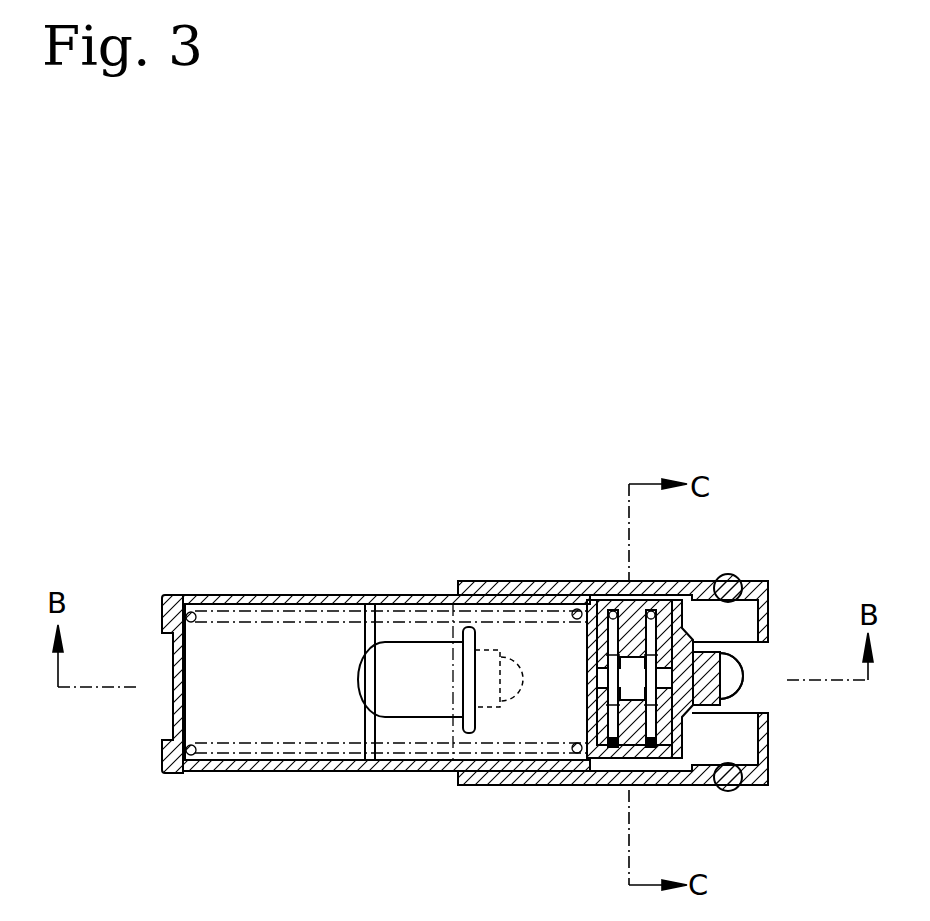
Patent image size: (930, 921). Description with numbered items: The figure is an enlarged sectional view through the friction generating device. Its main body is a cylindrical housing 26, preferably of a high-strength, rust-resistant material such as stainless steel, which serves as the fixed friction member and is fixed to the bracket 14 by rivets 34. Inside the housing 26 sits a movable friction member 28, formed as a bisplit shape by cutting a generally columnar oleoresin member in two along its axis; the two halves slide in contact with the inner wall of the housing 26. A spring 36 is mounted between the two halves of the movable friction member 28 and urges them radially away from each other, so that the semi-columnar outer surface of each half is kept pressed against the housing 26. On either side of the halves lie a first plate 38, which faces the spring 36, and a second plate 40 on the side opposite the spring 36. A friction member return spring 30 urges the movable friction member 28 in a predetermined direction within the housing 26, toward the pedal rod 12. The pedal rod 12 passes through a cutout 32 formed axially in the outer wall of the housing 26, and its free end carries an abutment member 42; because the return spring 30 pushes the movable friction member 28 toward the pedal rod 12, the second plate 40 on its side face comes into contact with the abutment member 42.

The pedal rod 12 is at (732, 678).
The bracket 14 is at (490, 581).
The cylindrical housing 26 is at (287, 598).
The movable friction member 28 is at (400, 632).
The friction member return spring 30 is at (220, 612).
The cutout 32 is at (430, 702).
The rivets 34 is at (728, 574).
The spring 36 is at (610, 760).
The first plate 38 is at (568, 608).
The second plate 40 is at (684, 602).
The abutment member 42 is at (712, 645).